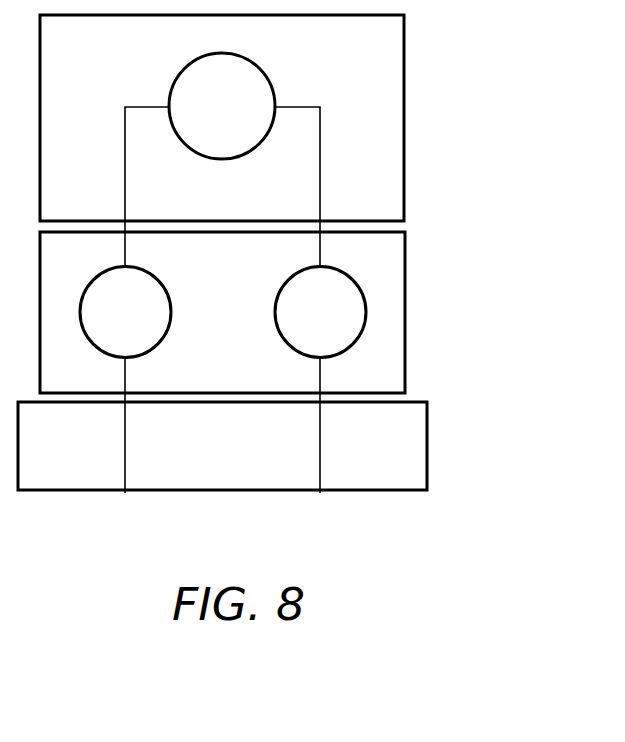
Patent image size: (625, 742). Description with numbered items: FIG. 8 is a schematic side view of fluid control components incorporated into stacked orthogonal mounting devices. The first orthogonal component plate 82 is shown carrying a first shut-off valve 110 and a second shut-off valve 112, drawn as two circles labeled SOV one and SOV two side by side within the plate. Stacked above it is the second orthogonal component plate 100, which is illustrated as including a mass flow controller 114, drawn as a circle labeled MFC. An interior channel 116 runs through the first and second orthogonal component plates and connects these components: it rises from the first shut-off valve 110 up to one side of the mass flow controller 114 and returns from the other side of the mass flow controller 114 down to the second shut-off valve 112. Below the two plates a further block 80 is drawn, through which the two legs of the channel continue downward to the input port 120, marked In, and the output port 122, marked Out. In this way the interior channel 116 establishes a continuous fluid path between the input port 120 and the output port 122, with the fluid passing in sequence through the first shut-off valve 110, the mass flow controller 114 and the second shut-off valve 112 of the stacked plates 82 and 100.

The second orthogonal component plate 100 is at (405, 113).
The first orthogonal component plate 82 is at (406, 307).
The chamber/base unit 80 is at (428, 438).
The mass flow controller 114 is at (266, 68).
The interior channel 116 is at (127, 182).
The first shut-off valve 110 is at (163, 275).
The second shut-off valve 112 is at (282, 333).
The input port 120 is at (124, 494).
The output port 122 is at (322, 494).